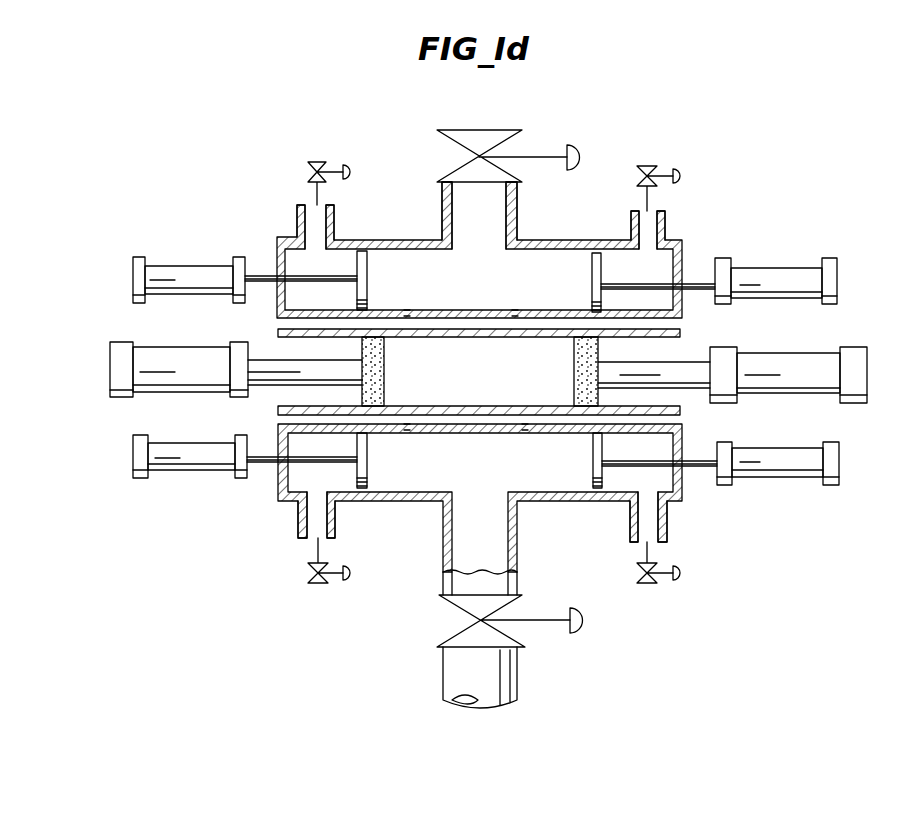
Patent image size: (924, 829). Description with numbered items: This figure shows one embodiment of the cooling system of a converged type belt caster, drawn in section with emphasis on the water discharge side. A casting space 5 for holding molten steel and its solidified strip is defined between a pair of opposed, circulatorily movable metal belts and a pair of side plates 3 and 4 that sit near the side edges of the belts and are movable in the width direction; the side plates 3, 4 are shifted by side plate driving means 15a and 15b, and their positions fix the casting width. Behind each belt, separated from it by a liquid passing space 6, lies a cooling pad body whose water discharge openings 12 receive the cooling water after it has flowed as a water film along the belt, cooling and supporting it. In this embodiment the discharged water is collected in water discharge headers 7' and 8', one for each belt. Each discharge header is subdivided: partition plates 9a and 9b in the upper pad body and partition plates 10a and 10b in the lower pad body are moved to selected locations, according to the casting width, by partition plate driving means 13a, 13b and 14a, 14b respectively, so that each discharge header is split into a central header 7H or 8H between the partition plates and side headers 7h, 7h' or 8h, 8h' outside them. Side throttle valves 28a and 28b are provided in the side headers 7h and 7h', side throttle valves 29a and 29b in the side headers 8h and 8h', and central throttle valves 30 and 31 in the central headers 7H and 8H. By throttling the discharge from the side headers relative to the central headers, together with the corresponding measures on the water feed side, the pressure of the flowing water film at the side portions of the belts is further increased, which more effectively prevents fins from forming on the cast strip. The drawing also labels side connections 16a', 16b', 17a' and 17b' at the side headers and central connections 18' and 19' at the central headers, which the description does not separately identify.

The side plate 3 is at (578, 340).
The side plate 4 is at (378, 420).
The casting space 5 is at (480, 381).
The liquid passing space 6 is at (278, 333).
The water discharge header 7' is at (479, 239).
The central header 7H is at (490, 286).
The side header 7h is at (270, 302).
The side header 7h' is at (696, 304).
The water discharge header 8' is at (480, 498).
The central header 8H is at (490, 474).
The side header 8h is at (270, 436).
The side header 8h' is at (709, 440).
The partition plate 9a is at (357, 258).
The partition plate 9b is at (601, 255).
The partition plate 10a is at (357, 474).
The partition plate 10b is at (602, 490).
The water discharge opening 12 is at (405, 310).
The partition plate driving means 13a is at (172, 265).
The partition plate driving means 13b is at (790, 272).
The partition plate driving means 14a is at (195, 470).
The partition plate driving means 14b is at (790, 470).
The side plate driving means 15a is at (193, 375).
The side plate driving means 15b is at (768, 360).
The upper side port 16a' is at (269, 223).
The upper side port 16b' is at (697, 228).
The lower side port 17a' is at (278, 524).
The lower side port 17b' is at (681, 524).
The inlet pipe 18' is at (454, 204).
The outlet pipe 19' is at (511, 639).
The side throttle valve 28a is at (317, 162).
The side throttle valve 28b is at (647, 166).
The side throttle valve 29a is at (318, 583).
The side throttle valve 29b is at (647, 583).
The central throttle valve 30 is at (483, 130).
The central throttle valve 31 is at (465, 620).